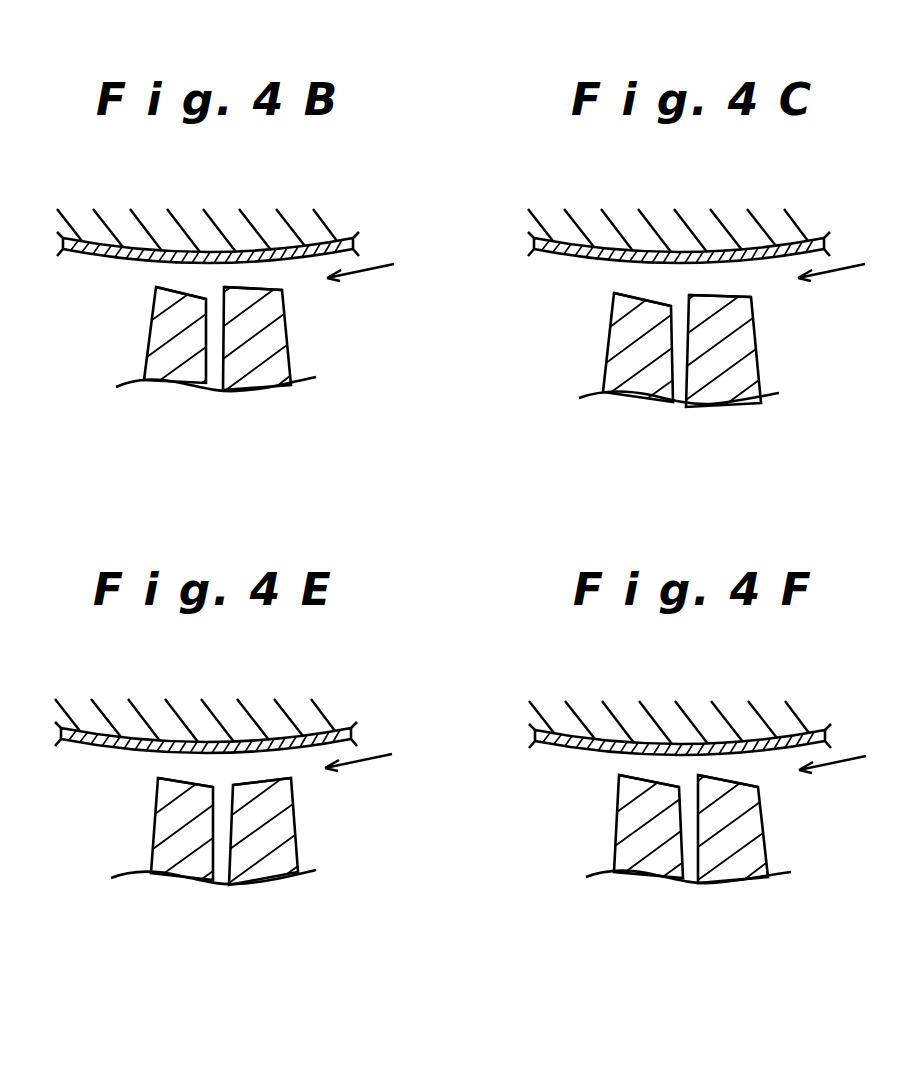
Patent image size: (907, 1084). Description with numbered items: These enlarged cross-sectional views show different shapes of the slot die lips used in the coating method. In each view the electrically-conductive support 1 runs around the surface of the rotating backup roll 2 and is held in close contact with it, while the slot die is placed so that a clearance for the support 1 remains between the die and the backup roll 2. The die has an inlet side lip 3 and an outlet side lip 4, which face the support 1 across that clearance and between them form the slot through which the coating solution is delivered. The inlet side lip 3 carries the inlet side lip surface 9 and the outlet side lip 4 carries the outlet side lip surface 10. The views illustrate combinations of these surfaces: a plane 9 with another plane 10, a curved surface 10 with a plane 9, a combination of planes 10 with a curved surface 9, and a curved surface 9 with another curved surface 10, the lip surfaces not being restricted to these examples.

In FIG. 4B, the electrically-conductive support 1 is at (114, 258).
In FIG. 4C, the electrically-conductive support 1 is at (574, 260).
In FIG. 4E, the electrically-conductive support 1 is at (110, 749).
In FIG. 4F, the electrically-conductive support 1 is at (574, 749).
In FIG. 4B, the backup roll 2 is at (315, 229).
In FIG. 4C, the backup roll 2 is at (786, 231).
In FIG. 4E, the backup roll 2 is at (323, 718).
In FIG. 4F, the backup roll 2 is at (786, 717).
In FIG. 4B, the inlet side lip 3 is at (268, 353).
In FIG. 4C, the inlet side lip 3 is at (732, 357).
In FIG. 4E, the inlet side lip 3 is at (272, 843).
In FIG. 4F, the inlet side lip 3 is at (748, 843).
In FIG. 4B, the outlet side lip 4 is at (168, 336).
In FIG. 4C, the outlet side lip 4 is at (628, 340).
In FIG. 4E, the outlet side lip 4 is at (176, 829).
In FIG. 4F, the outlet side lip 4 is at (632, 825).
In FIG. 4B, the inlet side lip surface 9 is at (264, 291).
In FIG. 4C, the inlet side lip surface 9 is at (726, 294).
In FIG. 4E, the inlet side lip surface 9 is at (266, 784).
In FIG. 4F, the inlet side lip surface 9 is at (735, 784).
In FIG. 4B, the outlet side lip surface 10 is at (190, 292).
In FIG. 4C, the outlet side lip surface 10 is at (648, 298).
In FIG. 4E, the outlet side lip surface 10 is at (190, 780).
In FIG. 4F, the outlet side lip surface 10 is at (650, 777).